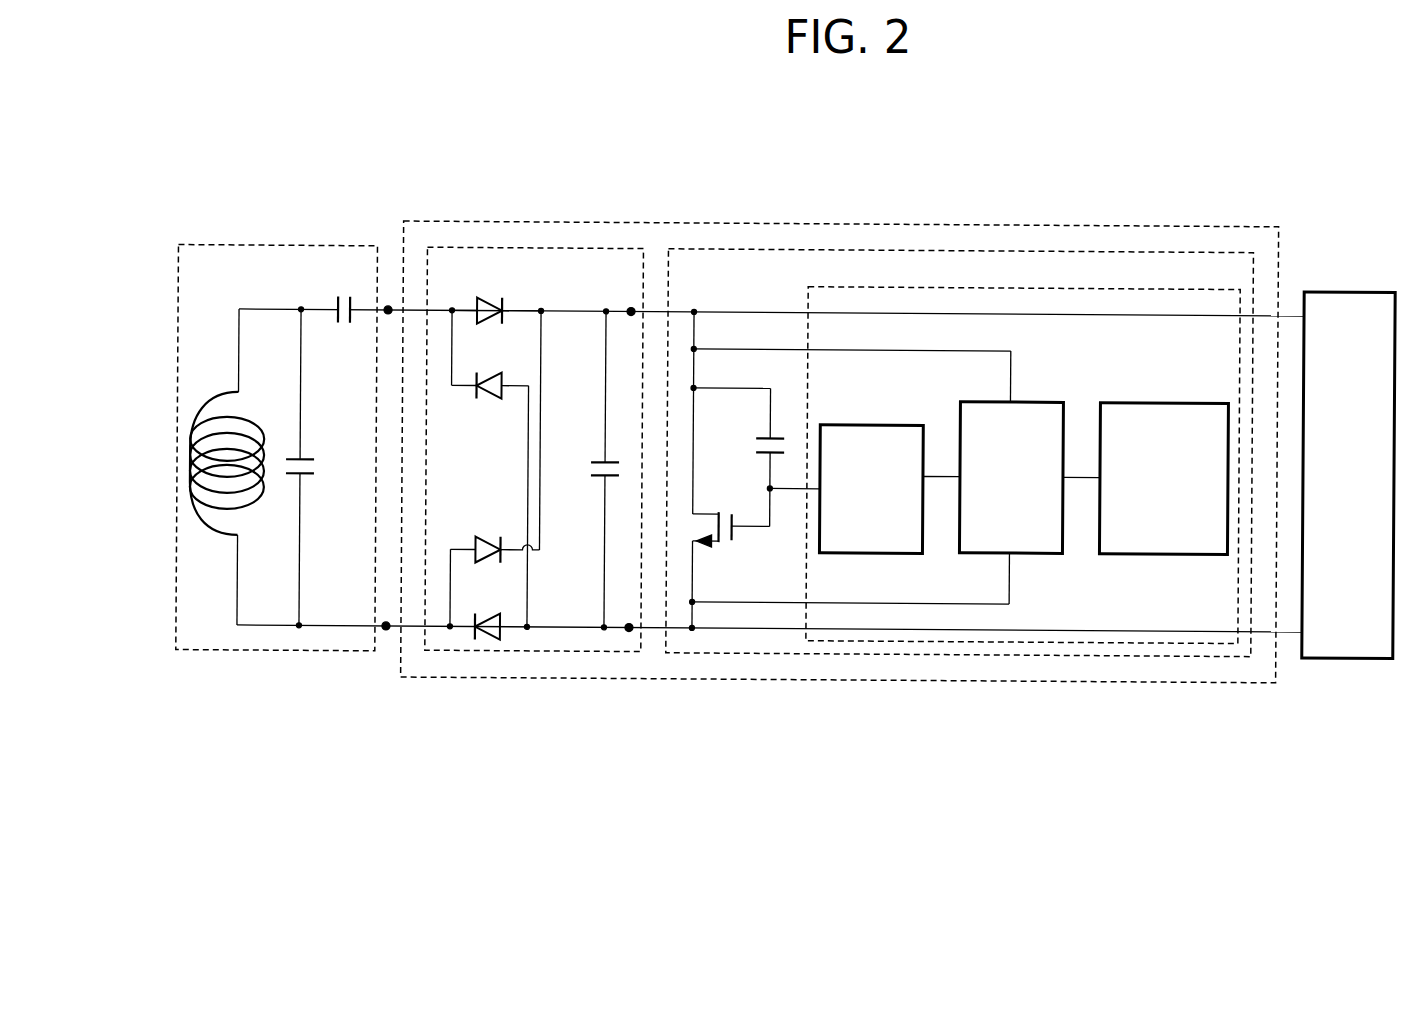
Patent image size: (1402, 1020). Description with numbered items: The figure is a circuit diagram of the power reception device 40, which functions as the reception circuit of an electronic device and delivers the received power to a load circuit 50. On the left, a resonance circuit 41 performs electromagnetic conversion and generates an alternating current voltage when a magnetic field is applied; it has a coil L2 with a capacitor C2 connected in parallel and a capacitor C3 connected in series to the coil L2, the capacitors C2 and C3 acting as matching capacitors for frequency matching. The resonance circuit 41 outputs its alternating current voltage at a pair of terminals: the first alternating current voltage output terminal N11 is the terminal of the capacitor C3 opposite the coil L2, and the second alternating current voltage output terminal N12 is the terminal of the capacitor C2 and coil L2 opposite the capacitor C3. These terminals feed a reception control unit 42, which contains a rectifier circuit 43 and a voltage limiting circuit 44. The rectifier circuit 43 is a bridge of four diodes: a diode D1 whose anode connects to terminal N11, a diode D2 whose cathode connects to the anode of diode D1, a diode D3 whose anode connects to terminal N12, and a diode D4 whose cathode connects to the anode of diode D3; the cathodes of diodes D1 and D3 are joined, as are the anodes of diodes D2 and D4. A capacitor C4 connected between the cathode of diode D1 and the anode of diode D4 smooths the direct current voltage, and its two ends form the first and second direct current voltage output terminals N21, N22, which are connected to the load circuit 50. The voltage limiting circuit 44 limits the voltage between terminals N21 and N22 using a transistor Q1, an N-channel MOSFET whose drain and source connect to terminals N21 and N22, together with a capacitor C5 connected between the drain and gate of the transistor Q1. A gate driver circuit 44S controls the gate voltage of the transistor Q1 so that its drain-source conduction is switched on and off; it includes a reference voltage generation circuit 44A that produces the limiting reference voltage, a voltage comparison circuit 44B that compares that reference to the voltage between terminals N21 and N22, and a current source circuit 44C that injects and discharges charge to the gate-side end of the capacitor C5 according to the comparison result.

The power reception device 40 is at (221, 158).
The resonance circuit 41 is at (283, 247).
The reception control unit 42 is at (448, 222).
The rectifier circuit 43 is at (537, 249).
The voltage limiting circuit 44 is at (921, 249).
The gate driver circuit 44S is at (1072, 286).
The reference voltage generation circuit 44A is at (1163, 553).
The voltage comparison circuit 44B is at (1037, 553).
The current source circuit 44C is at (873, 553).
The load circuit 50 is at (1340, 288).
The first alternating current voltage output terminal N11 is at (388, 306).
The second alternating current voltage output terminal N12 is at (388, 634).
The first direct current voltage output terminal N21 is at (630, 306).
The second direct current voltage output terminal N22 is at (631, 634).
The coil L2 is at (233, 463).
The capacitor C2 is at (314, 467).
The capacitor C3 is at (340, 293).
The capacitor C4 is at (591, 469).
The capacitor C5 is at (739, 438).
The diode D1 is at (496, 294).
The diode D2 is at (489, 370).
The diode D3 is at (494, 534).
The diode D4 is at (497, 611).
The transistor Q1 is at (731, 533).